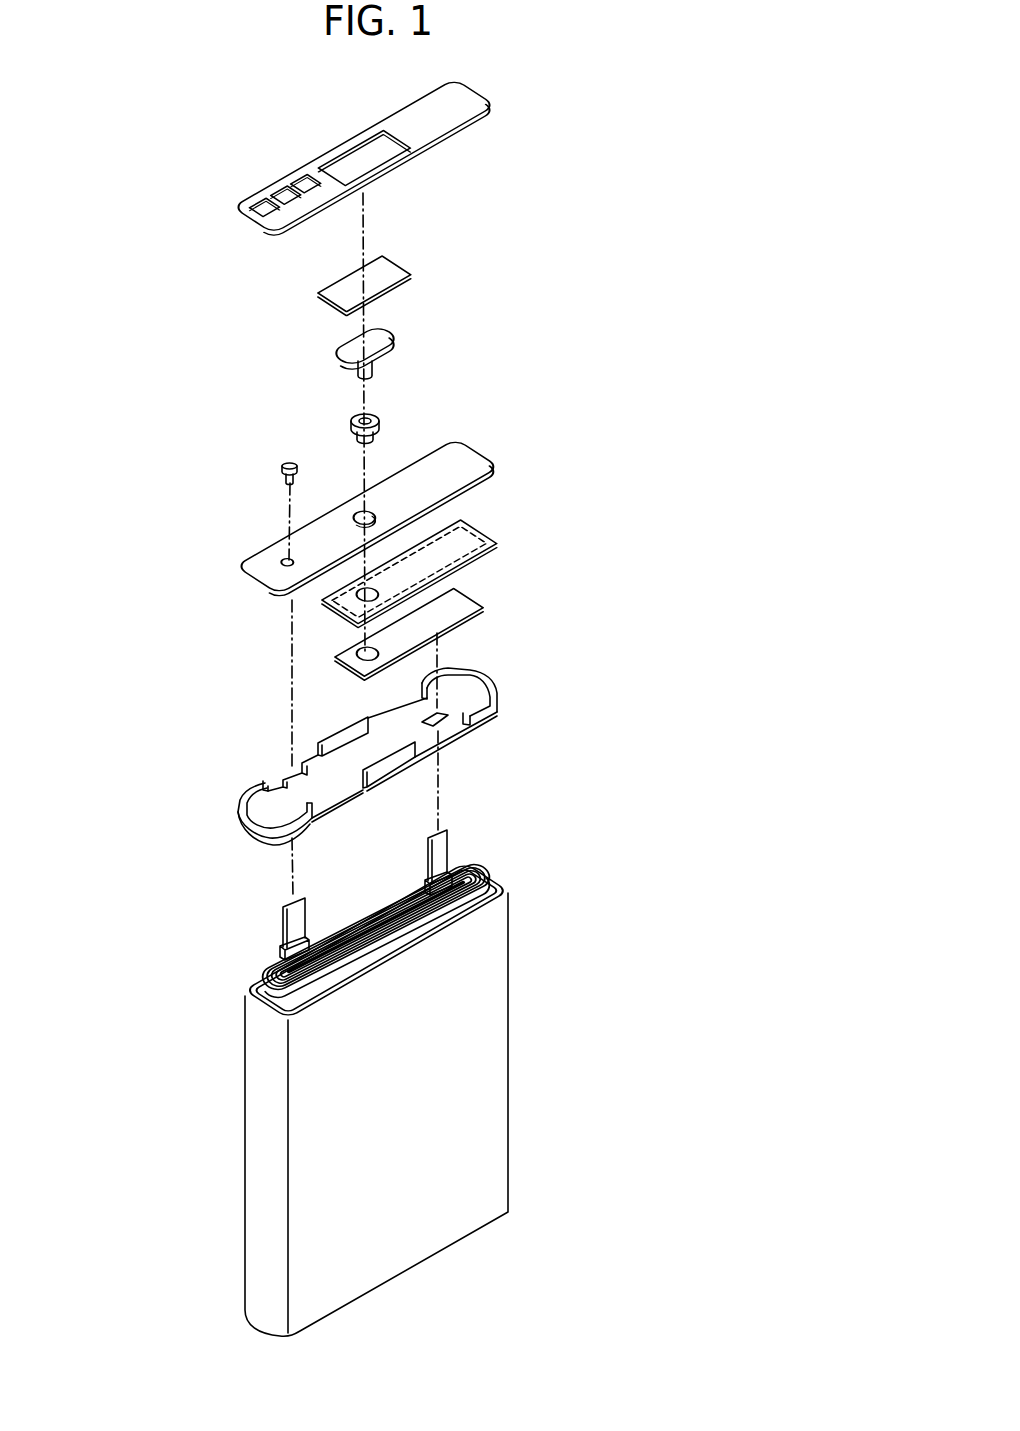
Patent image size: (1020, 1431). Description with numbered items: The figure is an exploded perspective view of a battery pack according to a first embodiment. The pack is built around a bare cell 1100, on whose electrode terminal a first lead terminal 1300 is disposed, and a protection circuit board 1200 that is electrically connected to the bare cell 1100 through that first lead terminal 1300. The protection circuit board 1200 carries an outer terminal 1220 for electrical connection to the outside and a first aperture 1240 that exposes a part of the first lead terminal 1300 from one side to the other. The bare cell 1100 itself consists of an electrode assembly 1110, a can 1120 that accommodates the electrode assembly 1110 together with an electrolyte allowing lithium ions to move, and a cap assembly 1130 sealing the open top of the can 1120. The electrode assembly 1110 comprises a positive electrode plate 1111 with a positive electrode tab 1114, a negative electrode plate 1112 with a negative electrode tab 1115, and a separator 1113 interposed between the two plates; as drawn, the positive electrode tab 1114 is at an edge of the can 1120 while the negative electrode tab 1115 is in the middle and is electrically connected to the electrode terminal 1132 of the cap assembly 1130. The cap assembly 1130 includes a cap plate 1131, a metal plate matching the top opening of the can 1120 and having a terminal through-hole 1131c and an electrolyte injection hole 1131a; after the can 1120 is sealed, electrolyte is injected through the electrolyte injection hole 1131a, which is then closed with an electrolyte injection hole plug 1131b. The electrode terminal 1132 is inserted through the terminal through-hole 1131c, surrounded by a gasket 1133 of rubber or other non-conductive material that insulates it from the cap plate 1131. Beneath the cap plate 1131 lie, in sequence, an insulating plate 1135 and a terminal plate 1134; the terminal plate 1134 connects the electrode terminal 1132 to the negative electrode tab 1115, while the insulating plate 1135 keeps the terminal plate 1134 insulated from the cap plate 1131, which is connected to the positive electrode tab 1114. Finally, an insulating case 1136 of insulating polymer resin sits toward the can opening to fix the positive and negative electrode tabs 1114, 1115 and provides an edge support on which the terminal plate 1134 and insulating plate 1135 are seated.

The bare cell 1100 is at (718, 496).
The electrode assembly 1110 is at (568, 755).
The positive electrode plate 1111 is at (497, 882).
The negative electrode plate 1112 is at (473, 857).
The separator 1113 is at (487, 873).
The positive electrode tab 1114 is at (303, 897).
The negative electrode tab 1115 is at (447, 830).
The can 1120 is at (500, 1030).
The cap assembly 1130 is at (650, 341).
The cap plate 1131 is at (405, 503).
The electrolyte injection hole 1131a is at (287, 562).
The electrolyte injection hole plug 1131b is at (282, 463).
The terminal through-hole 1131c is at (364, 517).
The electrode terminal 1132 is at (383, 340).
The gasket 1133 is at (380, 418).
The terminal plate 1134 is at (480, 597).
The insulating plate 1135 is at (483, 532).
The insulating case 1136 is at (492, 668).
The protection circuit board 1200 is at (302, 153).
The outer terminal 1220 is at (285, 196).
The first aperture 1240 is at (364, 158).
The first lead terminal 1300 is at (305, 318).